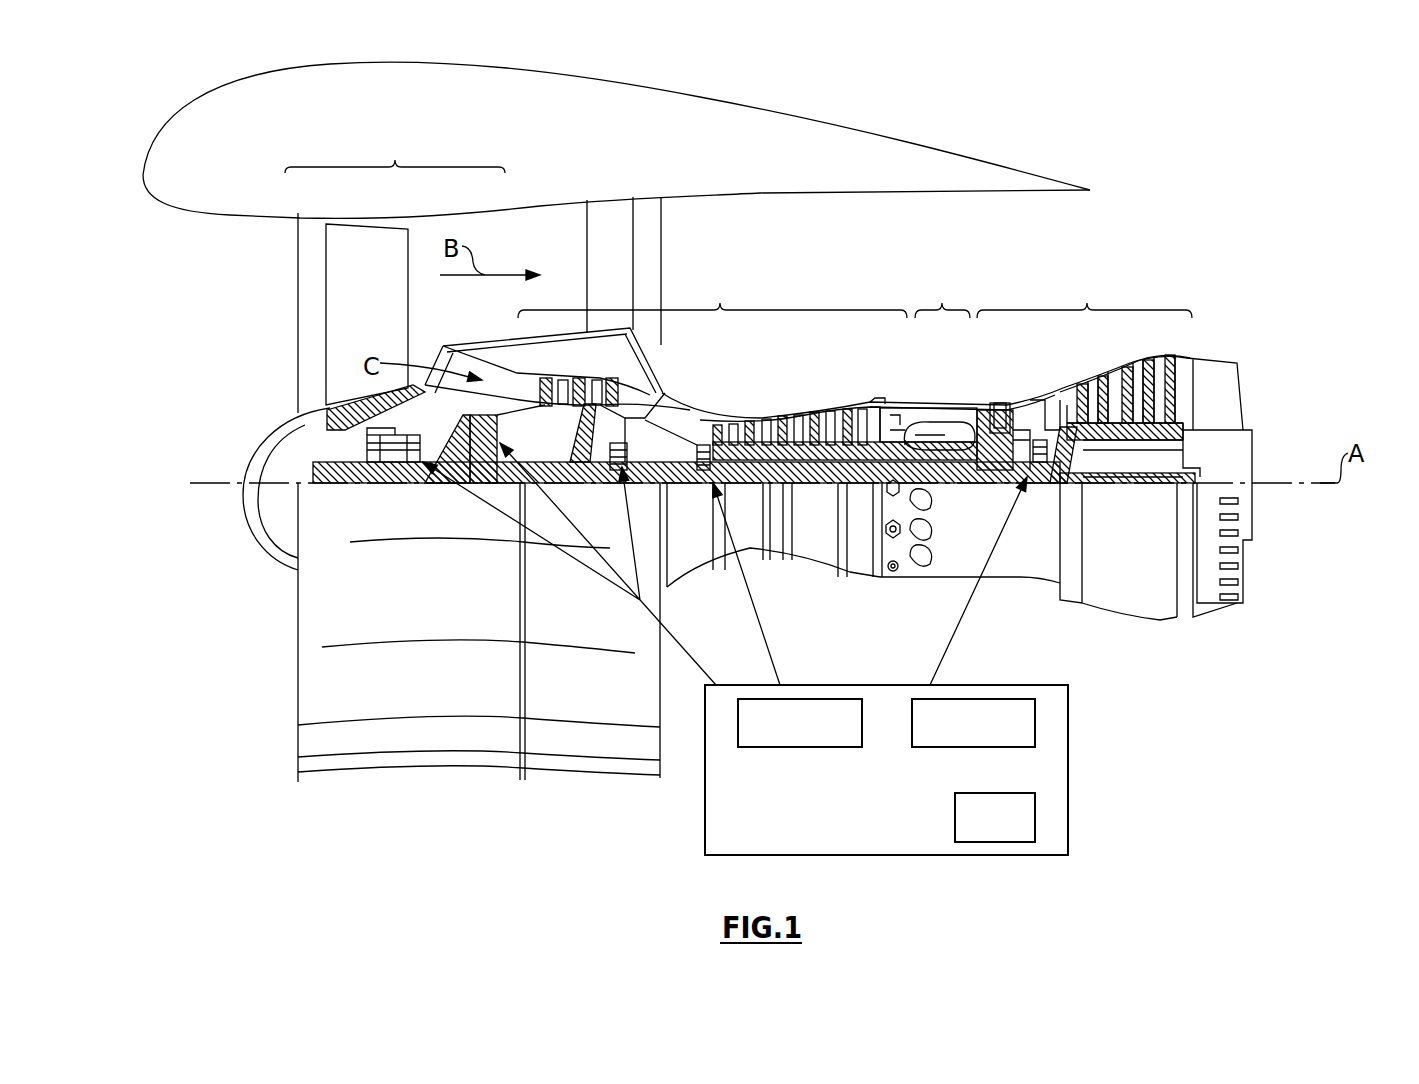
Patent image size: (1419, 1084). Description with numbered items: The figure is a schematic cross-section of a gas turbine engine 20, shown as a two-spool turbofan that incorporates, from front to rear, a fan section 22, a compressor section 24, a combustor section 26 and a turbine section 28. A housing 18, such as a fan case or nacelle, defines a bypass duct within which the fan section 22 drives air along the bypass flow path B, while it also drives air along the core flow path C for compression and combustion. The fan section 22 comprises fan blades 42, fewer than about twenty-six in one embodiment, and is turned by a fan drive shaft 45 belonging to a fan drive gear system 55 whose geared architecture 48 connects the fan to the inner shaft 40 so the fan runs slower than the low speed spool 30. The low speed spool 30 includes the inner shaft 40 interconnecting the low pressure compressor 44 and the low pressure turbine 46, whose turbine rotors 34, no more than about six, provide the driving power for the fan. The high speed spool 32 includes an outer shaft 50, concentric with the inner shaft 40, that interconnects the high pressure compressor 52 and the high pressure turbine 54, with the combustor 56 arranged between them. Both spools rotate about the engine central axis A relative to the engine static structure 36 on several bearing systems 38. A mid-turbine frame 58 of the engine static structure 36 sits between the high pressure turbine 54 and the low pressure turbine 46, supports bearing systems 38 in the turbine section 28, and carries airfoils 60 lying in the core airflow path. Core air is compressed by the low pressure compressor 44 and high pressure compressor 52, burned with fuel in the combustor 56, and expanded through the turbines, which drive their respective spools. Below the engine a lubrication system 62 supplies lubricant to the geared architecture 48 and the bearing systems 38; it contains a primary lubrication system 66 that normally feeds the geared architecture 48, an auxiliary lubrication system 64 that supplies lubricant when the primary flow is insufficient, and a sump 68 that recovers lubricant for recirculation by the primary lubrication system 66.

The housing 18 is at (608, 114).
The gas turbine engine 20 is at (1140, 118).
The fan section 22 is at (395, 152).
The compressor section 24 is at (712, 368).
The combustor section 26 is at (942, 296).
The turbine section 28 is at (1084, 296).
The low speed spool 30 is at (819, 499).
The high speed spool 32 is at (853, 407).
The turbine rotors 34 is at (1148, 447).
The engine static structure 36 is at (858, 584).
The bearing systems 38 is at (372, 478).
The inner shaft 40 is at (680, 488).
The fan blades 42 is at (385, 328).
The low pressure compressor 44 is at (597, 383).
The fan drive shaft 45 is at (323, 478).
The low pressure turbine 46 is at (1124, 382).
The geared architecture 48 is at (470, 465).
The outer shaft 50 is at (955, 487).
The high pressure compressor 52 is at (790, 414).
The high pressure turbine 54 is at (1003, 405).
The fan drive gear system 55 is at (300, 430).
The combustor 56 is at (933, 427).
The mid-turbine frame 58 is at (1046, 383).
The airfoils 60 is at (1060, 452).
The lubrication system 62 is at (1068, 748).
The auxiliary lubrication system 64 is at (1010, 698).
The primary lubrication system 66 is at (805, 698).
The sump 68 is at (1035, 812).